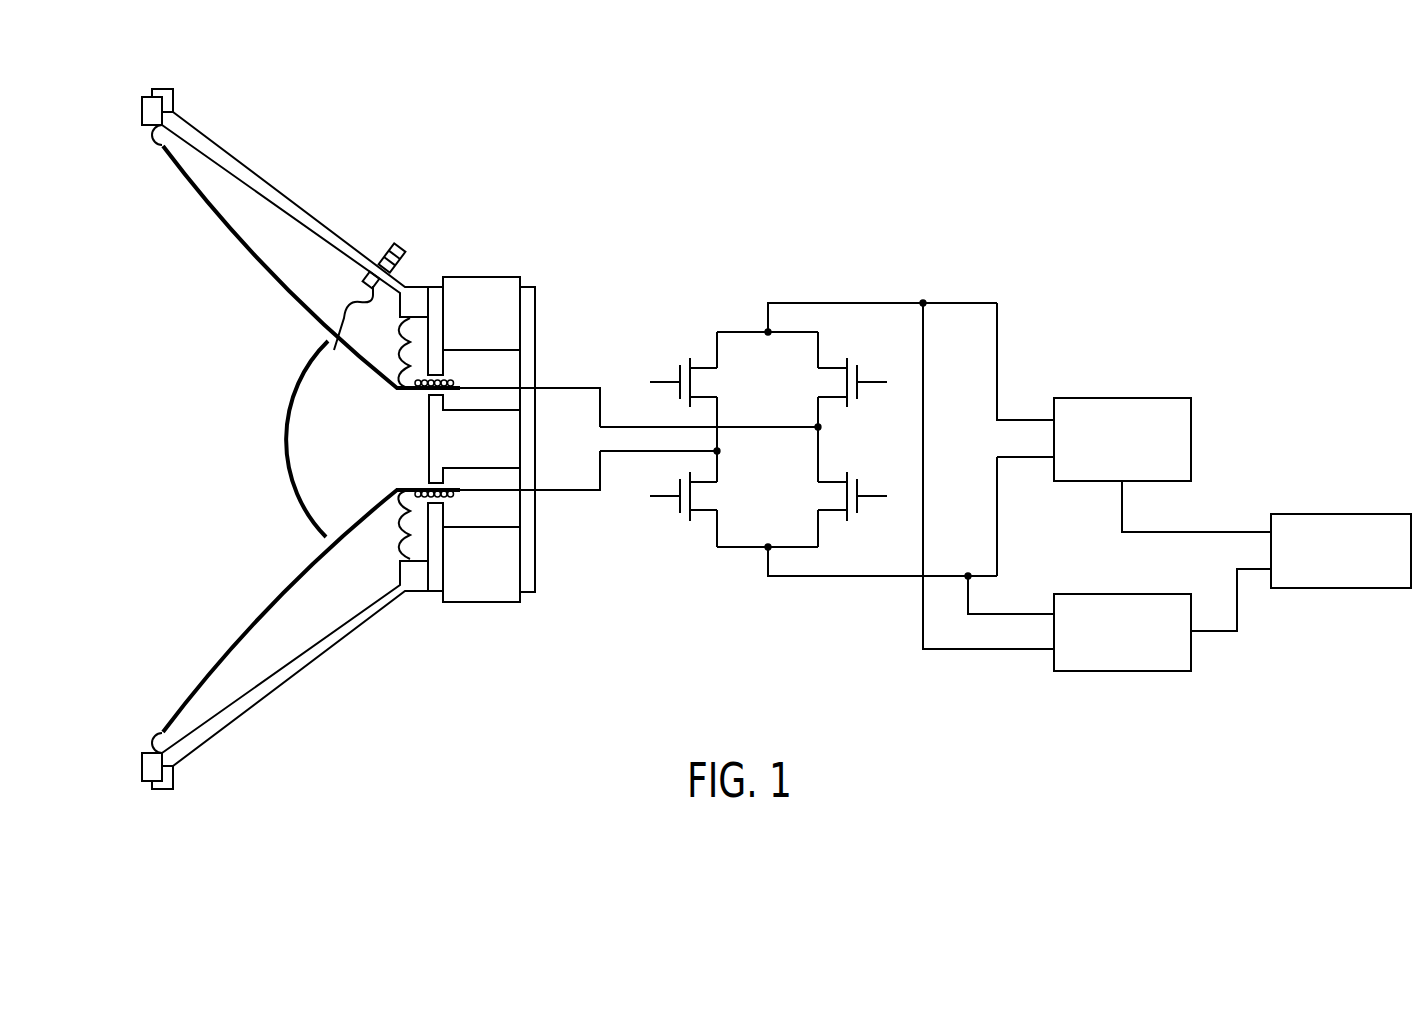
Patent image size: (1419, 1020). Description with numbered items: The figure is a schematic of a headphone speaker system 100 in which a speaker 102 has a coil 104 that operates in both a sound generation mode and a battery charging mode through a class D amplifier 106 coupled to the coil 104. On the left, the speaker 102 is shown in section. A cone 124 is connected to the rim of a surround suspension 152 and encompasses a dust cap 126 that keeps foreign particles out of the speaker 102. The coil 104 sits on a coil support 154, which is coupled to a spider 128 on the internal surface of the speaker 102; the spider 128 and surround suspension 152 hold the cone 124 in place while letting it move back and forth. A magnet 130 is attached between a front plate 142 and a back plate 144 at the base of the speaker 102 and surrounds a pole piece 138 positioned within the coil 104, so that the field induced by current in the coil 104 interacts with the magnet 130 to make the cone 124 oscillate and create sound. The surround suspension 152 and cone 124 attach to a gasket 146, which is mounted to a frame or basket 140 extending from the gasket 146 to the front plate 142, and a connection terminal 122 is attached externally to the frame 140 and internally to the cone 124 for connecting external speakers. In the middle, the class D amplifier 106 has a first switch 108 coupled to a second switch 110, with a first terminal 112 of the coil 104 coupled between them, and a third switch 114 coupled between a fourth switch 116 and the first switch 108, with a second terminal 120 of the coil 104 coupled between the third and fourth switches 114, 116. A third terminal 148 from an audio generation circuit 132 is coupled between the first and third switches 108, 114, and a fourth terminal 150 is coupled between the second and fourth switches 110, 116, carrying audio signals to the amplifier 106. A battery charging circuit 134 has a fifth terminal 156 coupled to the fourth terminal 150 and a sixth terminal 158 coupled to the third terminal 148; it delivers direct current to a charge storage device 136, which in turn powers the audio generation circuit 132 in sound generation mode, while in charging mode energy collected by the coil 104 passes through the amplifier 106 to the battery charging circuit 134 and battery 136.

The headphone speaker system 100 is at (1185, 140).
The speaker 102 is at (288, 142).
The coil 104 is at (422, 383).
The class D amplifier 106 is at (773, 487).
The first switch 108 is at (680, 368).
The second switch 110 is at (680, 503).
The first terminal 112 is at (568, 492).
The third switch 114 is at (857, 370).
The fourth switch 116 is at (857, 510).
The second terminal 120 is at (600, 393).
The connection terminal 122 is at (395, 240).
The cone 124 is at (165, 165).
The dust cap 126 is at (293, 369).
The spider 128 is at (390, 533).
The magnet 130 is at (478, 587).
The audio generation circuit 132 is at (1123, 400).
The battery charging circuit 134 is at (1131, 673).
The charge storage device 136 is at (1335, 514).
The pole piece 138 is at (480, 442).
The frame or basket 140 is at (287, 683).
The front plate 142 is at (435, 583).
The back plate 144 is at (528, 580).
The gasket 146 is at (143, 766).
The third terminal 148 is at (965, 303).
The fourth terminal 150 is at (943, 576).
The surround suspension 152 is at (153, 738).
The coil support 154 is at (455, 387).
The fifth terminal 156 is at (1017, 613).
The sixth terminal 158 is at (970, 653).